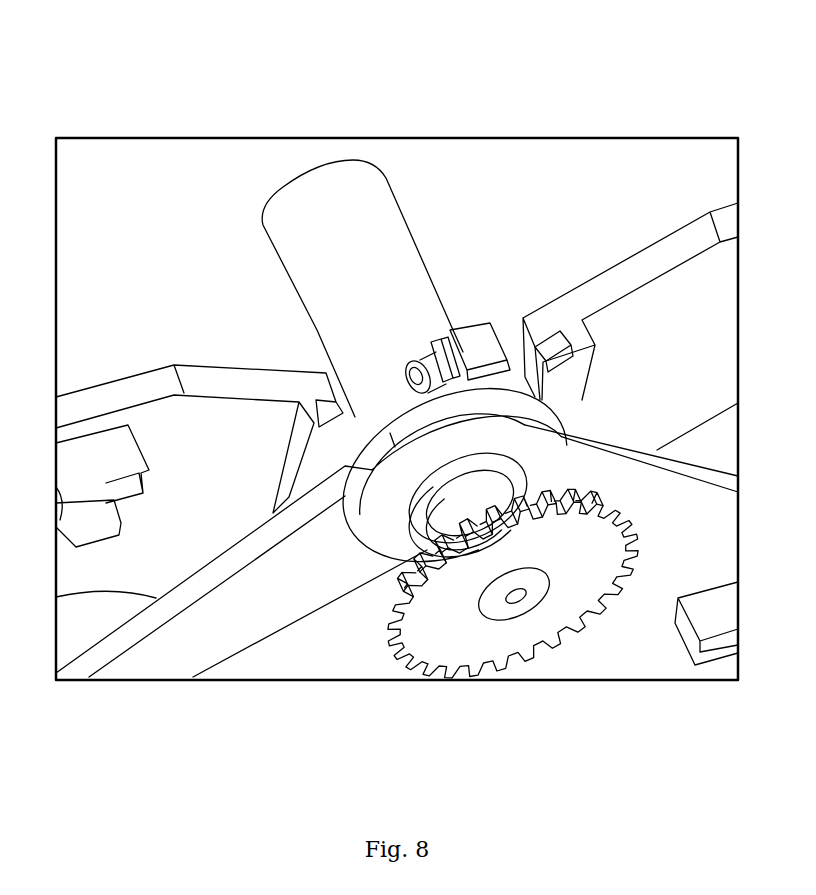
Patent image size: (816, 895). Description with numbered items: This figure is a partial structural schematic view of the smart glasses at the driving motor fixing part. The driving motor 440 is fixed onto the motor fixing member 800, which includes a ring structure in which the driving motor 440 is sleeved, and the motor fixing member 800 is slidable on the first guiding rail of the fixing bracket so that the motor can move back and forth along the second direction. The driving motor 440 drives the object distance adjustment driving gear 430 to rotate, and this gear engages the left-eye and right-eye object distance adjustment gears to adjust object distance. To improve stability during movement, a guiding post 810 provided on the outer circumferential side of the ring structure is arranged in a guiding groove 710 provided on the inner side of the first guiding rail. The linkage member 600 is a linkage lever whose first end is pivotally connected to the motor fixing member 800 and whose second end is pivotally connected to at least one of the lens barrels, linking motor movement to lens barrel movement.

The object distance adjustment driving gear 430 is at (453, 613).
The driving motor 440 is at (338, 203).
The linkage member 600 is at (301, 570).
The guiding groove 710 is at (524, 322).
The motor fixing member 800 is at (382, 407).
The guiding post 810 is at (558, 350).